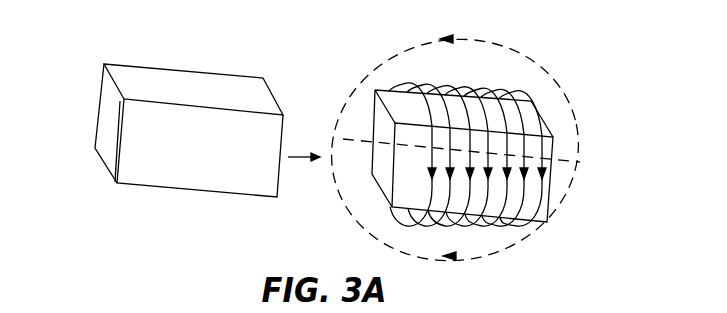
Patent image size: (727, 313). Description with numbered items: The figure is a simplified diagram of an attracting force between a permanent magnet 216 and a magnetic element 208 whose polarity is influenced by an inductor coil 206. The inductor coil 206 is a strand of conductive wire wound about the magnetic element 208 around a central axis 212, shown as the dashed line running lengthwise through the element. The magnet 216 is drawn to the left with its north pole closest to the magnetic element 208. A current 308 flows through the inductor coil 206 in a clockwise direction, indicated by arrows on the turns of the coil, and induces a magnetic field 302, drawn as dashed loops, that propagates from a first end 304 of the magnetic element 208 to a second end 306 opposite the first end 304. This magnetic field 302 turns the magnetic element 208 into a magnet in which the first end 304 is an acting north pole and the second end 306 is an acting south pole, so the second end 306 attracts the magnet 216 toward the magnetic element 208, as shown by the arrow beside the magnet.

The magnet 216 is at (207, 130).
The magnetic element 208 is at (412, 108).
The inductor coil 206 is at (468, 88).
The central axis 212 is at (410, 148).
The magnetic field 302 is at (567, 79).
The first end 304 is at (556, 162).
The second end 306 is at (371, 122).
The current 308 is at (522, 170).